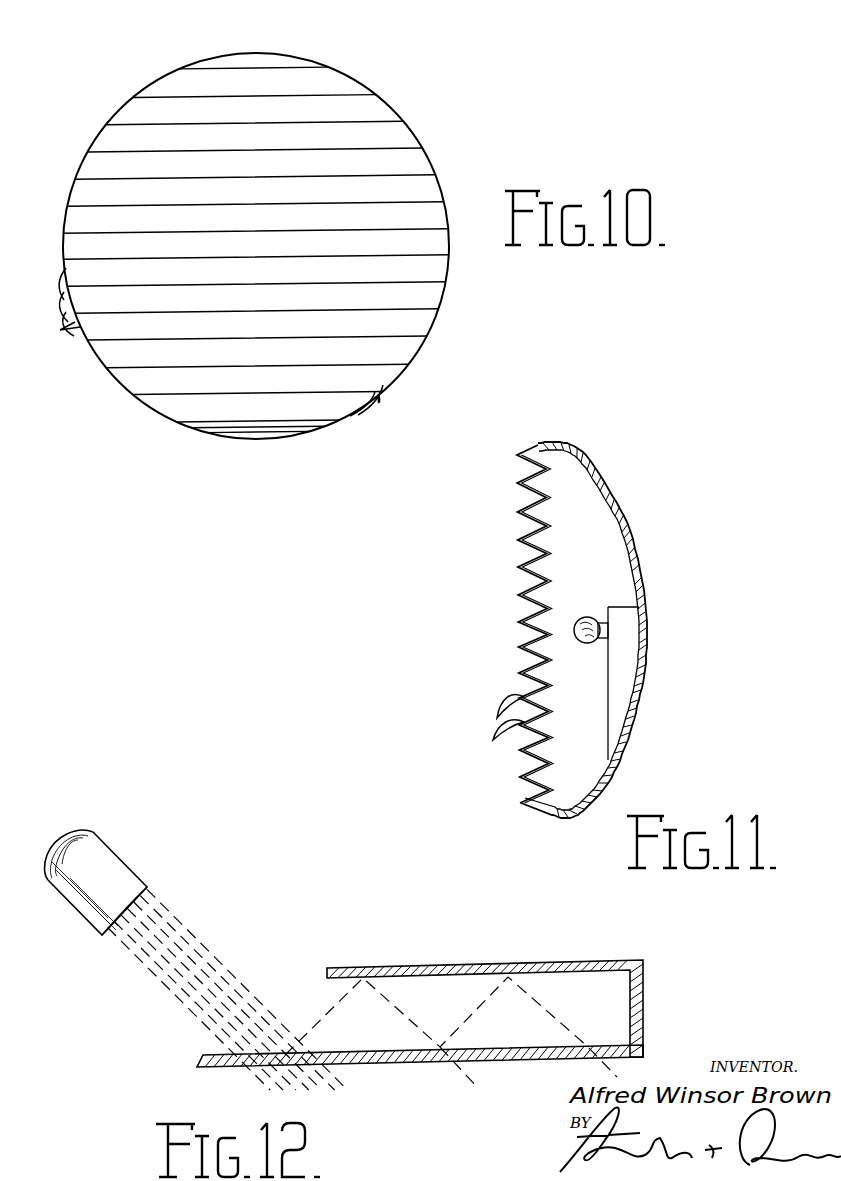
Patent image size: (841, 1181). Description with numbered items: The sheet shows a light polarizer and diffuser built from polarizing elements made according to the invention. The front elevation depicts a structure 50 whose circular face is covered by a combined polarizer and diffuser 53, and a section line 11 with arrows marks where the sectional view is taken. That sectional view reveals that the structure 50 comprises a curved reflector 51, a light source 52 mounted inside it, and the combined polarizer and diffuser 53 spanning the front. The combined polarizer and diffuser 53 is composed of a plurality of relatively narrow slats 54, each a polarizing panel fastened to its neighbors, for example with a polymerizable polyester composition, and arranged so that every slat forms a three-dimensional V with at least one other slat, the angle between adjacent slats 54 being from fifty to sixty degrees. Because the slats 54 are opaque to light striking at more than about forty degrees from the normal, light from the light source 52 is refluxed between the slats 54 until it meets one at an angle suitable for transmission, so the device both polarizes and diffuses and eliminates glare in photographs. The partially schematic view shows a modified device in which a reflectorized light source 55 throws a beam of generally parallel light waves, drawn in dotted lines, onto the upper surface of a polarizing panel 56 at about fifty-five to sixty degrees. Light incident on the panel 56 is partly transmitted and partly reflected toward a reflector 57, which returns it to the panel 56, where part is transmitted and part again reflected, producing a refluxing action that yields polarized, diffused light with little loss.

In FIG. 10, the section line 11 is at (251, 22).
In FIG. 10, the structure 50 is at (269, 246).
In FIG. 11, the structure 50 is at (567, 630).
In FIG. 11, the reflector 51 is at (642, 556).
In FIG. 11, the light source 52 is at (598, 618).
In FIG. 10, the combined polarizer and diffuser 53 is at (410, 302).
In FIG. 11, the combined polarizer and diffuser 53 is at (520, 654).
In FIG. 10, the slats 54 is at (75, 322).
In FIG. 11, the slats 54 is at (497, 716).
In FIG. 12, the reflectorized light source 55 is at (138, 858).
In FIG. 12, the polarizing panel 56 is at (412, 1066).
In FIG. 12, the reflector 57 is at (441, 968).